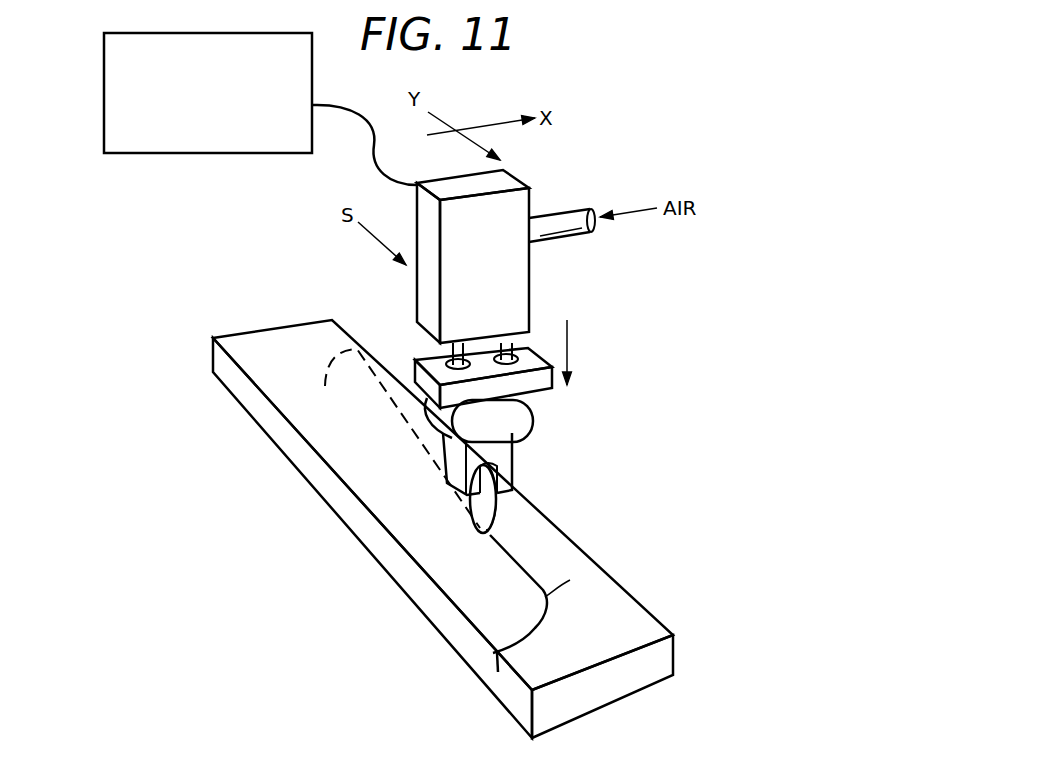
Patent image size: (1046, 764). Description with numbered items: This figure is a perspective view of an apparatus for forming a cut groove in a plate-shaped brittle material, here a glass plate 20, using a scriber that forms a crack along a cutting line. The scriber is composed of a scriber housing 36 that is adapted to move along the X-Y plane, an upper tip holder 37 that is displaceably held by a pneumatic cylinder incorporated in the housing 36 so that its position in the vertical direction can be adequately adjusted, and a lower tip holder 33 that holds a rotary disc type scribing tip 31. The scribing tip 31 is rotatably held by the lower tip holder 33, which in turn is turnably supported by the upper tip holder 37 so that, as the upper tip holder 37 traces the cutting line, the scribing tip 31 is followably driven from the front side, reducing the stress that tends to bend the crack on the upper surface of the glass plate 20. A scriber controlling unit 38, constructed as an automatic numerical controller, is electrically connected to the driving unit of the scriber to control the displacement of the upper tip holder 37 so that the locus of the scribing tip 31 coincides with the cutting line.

The scriber controlling unit 38 is at (104, 74).
The scriber housing 36 is at (518, 273).
The upper tip holder 37 is at (520, 420).
The lower tip holder 33 is at (507, 460).
The scribing tip 31 is at (497, 516).
The glass plate 20 is at (655, 663).